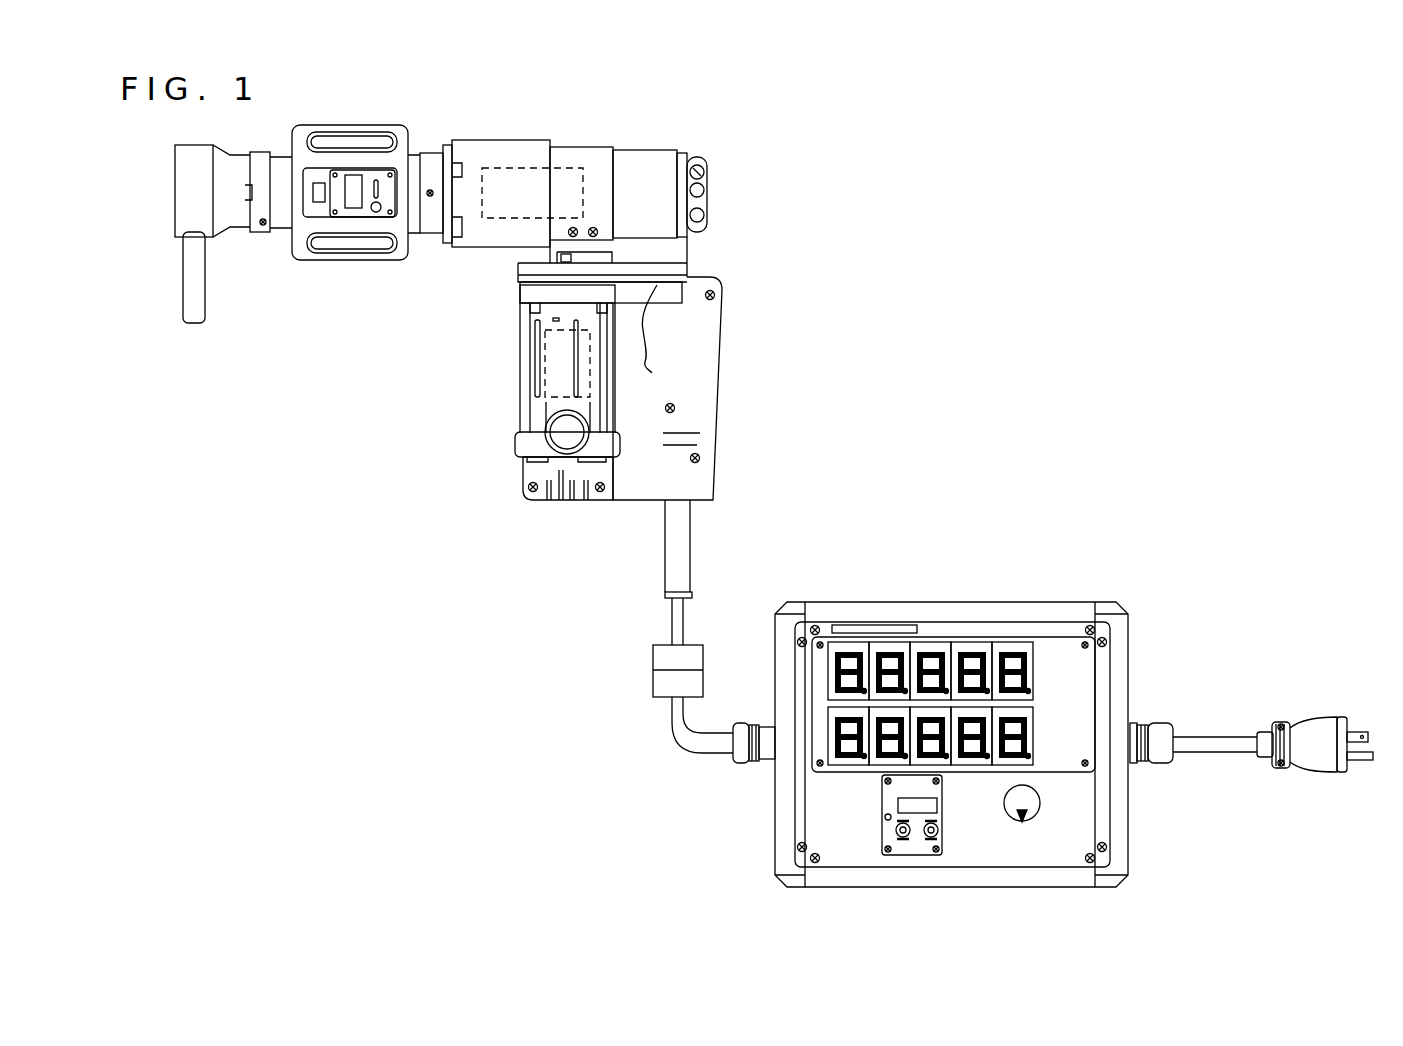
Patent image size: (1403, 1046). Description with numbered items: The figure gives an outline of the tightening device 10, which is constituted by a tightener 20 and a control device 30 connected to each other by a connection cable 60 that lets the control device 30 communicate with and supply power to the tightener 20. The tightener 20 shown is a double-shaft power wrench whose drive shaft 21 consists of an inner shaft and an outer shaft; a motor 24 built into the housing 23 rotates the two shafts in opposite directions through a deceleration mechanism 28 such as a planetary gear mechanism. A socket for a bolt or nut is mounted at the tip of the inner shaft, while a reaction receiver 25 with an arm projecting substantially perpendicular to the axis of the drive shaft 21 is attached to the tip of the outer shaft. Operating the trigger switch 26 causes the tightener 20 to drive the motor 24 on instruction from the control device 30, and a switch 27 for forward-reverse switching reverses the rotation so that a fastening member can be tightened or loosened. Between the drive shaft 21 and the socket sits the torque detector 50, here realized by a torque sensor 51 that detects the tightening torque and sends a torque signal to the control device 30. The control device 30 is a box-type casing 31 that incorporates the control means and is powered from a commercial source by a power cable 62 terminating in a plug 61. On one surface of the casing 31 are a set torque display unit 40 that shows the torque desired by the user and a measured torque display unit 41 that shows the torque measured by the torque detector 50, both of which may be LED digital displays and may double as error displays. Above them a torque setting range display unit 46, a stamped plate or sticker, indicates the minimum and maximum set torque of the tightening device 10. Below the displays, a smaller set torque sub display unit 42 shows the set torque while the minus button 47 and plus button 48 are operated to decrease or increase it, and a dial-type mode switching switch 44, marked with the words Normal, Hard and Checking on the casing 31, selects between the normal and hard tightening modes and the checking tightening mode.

The tightening device 10 is at (971, 233).
The tightener 20 is at (733, 157).
The drive shaft 21 is at (433, 230).
The housing 23 is at (518, 150).
The motor 24 is at (545, 360).
The reaction receiver 25 is at (207, 295).
The trigger switch 26 is at (652, 343).
The switch for forward-reverse switching 27 is at (708, 197).
The deceleration mechanism 28 is at (495, 165).
The control device 30 is at (1083, 584).
The casing 31 is at (1120, 665).
The set torque display unit 40 is at (960, 650).
The measured torque display unit 41 is at (838, 765).
The set torque sub display unit 42 is at (928, 805).
The mode switching switch 44 is at (1040, 797).
The torque setting range display unit 46 is at (887, 625).
The minus button 47 is at (893, 830).
The plus button 48 is at (918, 830).
The torque detector 50 is at (355, 276).
The torque sensor 51 is at (320, 177).
The connection cable 60 is at (680, 613).
The plug 61 is at (1317, 737).
The power cable 62 is at (1220, 743).